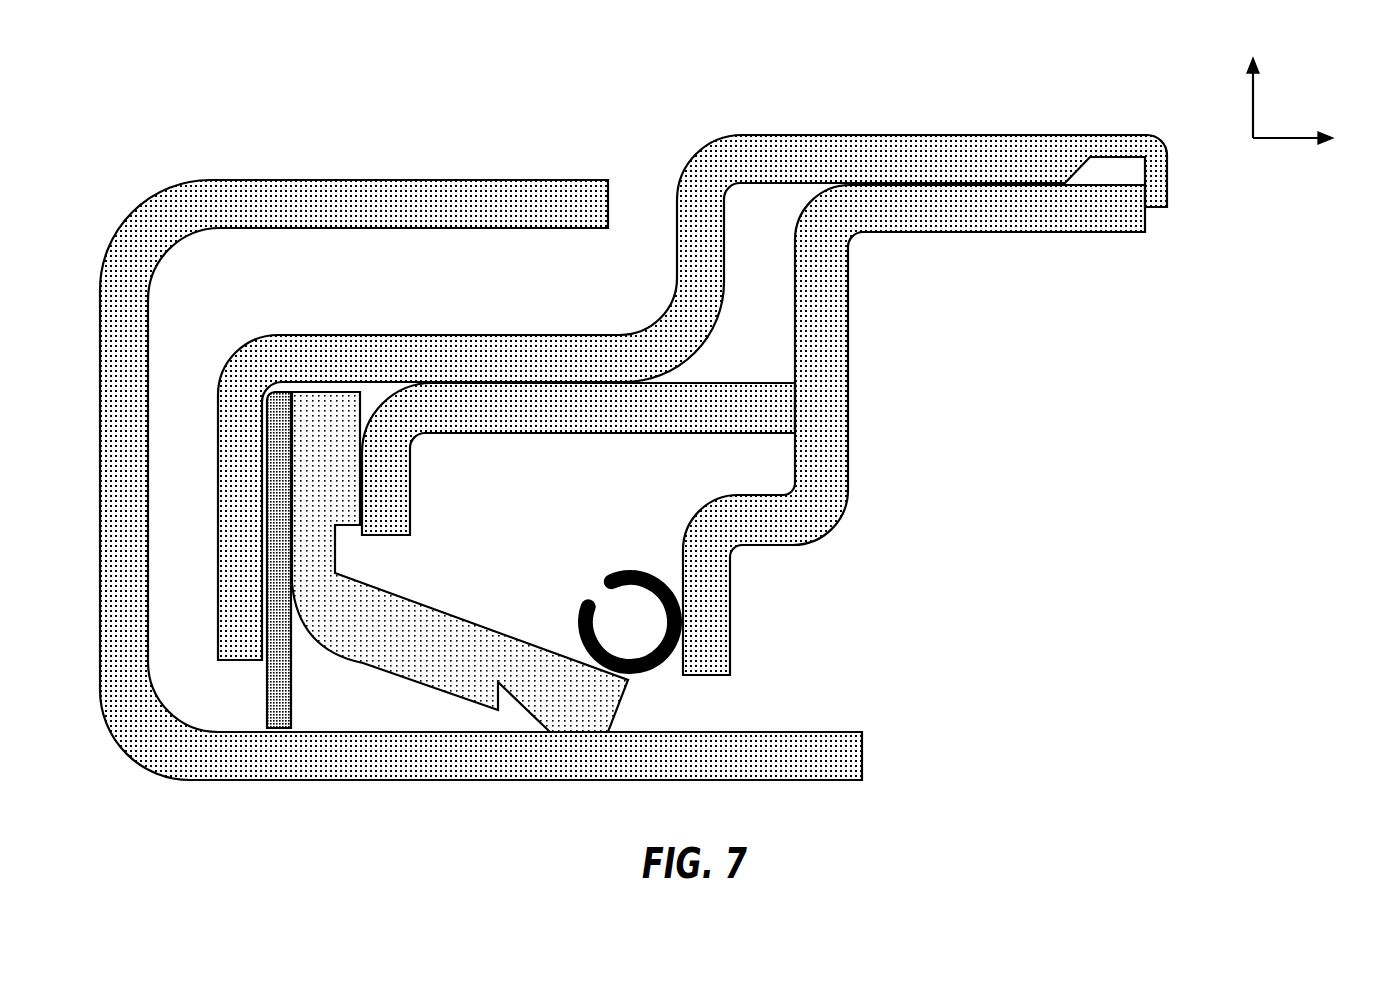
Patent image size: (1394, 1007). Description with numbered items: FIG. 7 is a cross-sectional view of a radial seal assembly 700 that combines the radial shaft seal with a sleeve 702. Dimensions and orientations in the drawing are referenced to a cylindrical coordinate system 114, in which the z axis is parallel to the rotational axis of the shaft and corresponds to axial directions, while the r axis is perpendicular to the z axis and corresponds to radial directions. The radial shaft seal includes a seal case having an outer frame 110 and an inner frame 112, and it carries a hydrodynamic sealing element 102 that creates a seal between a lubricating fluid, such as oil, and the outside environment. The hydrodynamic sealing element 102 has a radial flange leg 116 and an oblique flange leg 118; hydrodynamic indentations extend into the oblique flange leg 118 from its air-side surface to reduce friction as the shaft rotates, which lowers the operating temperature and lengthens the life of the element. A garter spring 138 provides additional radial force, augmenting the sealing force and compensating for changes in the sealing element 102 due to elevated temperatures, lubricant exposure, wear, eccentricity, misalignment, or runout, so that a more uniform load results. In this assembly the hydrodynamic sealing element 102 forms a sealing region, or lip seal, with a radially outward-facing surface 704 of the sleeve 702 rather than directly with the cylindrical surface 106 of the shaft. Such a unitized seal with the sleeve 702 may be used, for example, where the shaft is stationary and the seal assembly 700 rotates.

The radial seal assembly 700 is at (98, 97).
The sleeve 702 is at (445, 180).
The radially outward-facing surface 704 is at (410, 722).
The outer frame 110 is at (445, 335).
The inner frame 112 is at (848, 453).
The cylindrical surface 106 is at (411, 483).
The hydrodynamic sealing element 102 is at (447, 562).
The radial flange leg 116 is at (341, 466).
The oblique flange leg 118 is at (466, 673).
The garter spring 138 is at (627, 570).
The cylindrical coordinate system 114 is at (1312, 65).